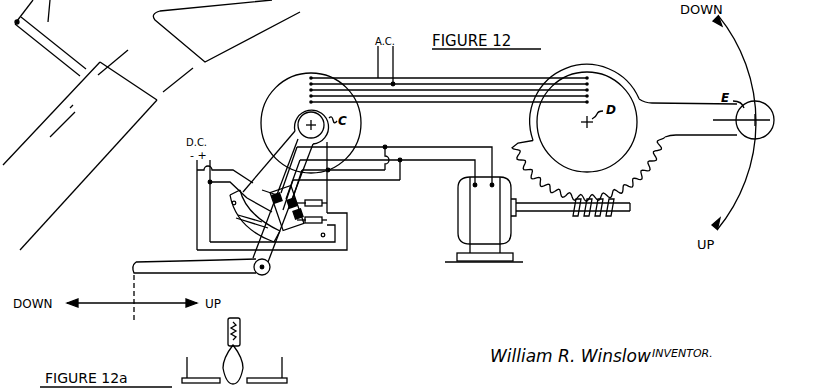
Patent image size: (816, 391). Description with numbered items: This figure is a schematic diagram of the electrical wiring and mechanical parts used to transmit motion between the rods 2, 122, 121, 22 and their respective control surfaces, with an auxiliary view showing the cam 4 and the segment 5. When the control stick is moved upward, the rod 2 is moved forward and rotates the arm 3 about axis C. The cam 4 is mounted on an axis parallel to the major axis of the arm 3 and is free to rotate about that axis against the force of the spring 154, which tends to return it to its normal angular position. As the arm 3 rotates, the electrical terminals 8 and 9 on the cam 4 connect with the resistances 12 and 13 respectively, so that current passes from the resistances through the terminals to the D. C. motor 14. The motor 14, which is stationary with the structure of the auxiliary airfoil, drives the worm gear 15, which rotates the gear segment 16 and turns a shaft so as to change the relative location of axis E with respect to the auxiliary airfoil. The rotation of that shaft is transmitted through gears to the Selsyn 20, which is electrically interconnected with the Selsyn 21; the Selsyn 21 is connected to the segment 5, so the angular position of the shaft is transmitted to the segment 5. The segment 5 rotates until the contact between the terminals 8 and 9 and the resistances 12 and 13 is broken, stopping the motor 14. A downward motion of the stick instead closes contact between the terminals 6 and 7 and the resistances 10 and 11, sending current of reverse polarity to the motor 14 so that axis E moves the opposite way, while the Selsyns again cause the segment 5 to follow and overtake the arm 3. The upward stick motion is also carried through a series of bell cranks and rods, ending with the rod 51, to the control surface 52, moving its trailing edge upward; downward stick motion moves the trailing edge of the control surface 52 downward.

In FIG. 12, the rod 2 is at (194, 289).
In FIG. 12, the rod 122 is at (158, 261).
In FIG. 12, the rod 121 is at (200, 260).
In FIG. 12, the rod 22 is at (238, 259).
In FIG. 12, the arm 3 is at (271, 264).
In FIG. 12, the cam 4 is at (268, 229).
In FIG. 12A, the cam 4 is at (241, 358).
In FIG. 12, the segment 5 is at (326, 194).
In FIG. 12A, the segment 5 is at (267, 378).
In FIG. 12, the terminal 6 is at (330, 200).
In FIG. 12, the terminal 7 is at (292, 222).
In FIG. 12, the terminal 8 is at (270, 215).
In FIG. 12, the terminal 9 is at (279, 194).
In FIG. 12, the resistance 10 is at (310, 197).
In FIG. 12, the resistance 11 is at (312, 228).
In FIG. 12, the resistance 12 is at (255, 216).
In FIG. 12, the resistance 13 is at (274, 172).
In FIG. 12, the D. C. motor 14 is at (458, 214).
In FIG. 12, the worm gear 15 is at (600, 214).
In FIG. 12, the gear segment 16 is at (643, 184).
In FIG. 12, the Selsyn 20 is at (639, 118).
In FIG. 12, the Selsyn 21 is at (361, 120).
In FIG. 12, the rod 51 is at (58, 46).
In FIG. 12, the control surface 52 is at (128, 78).
In FIG. 12A, the spring 154 is at (234, 333).